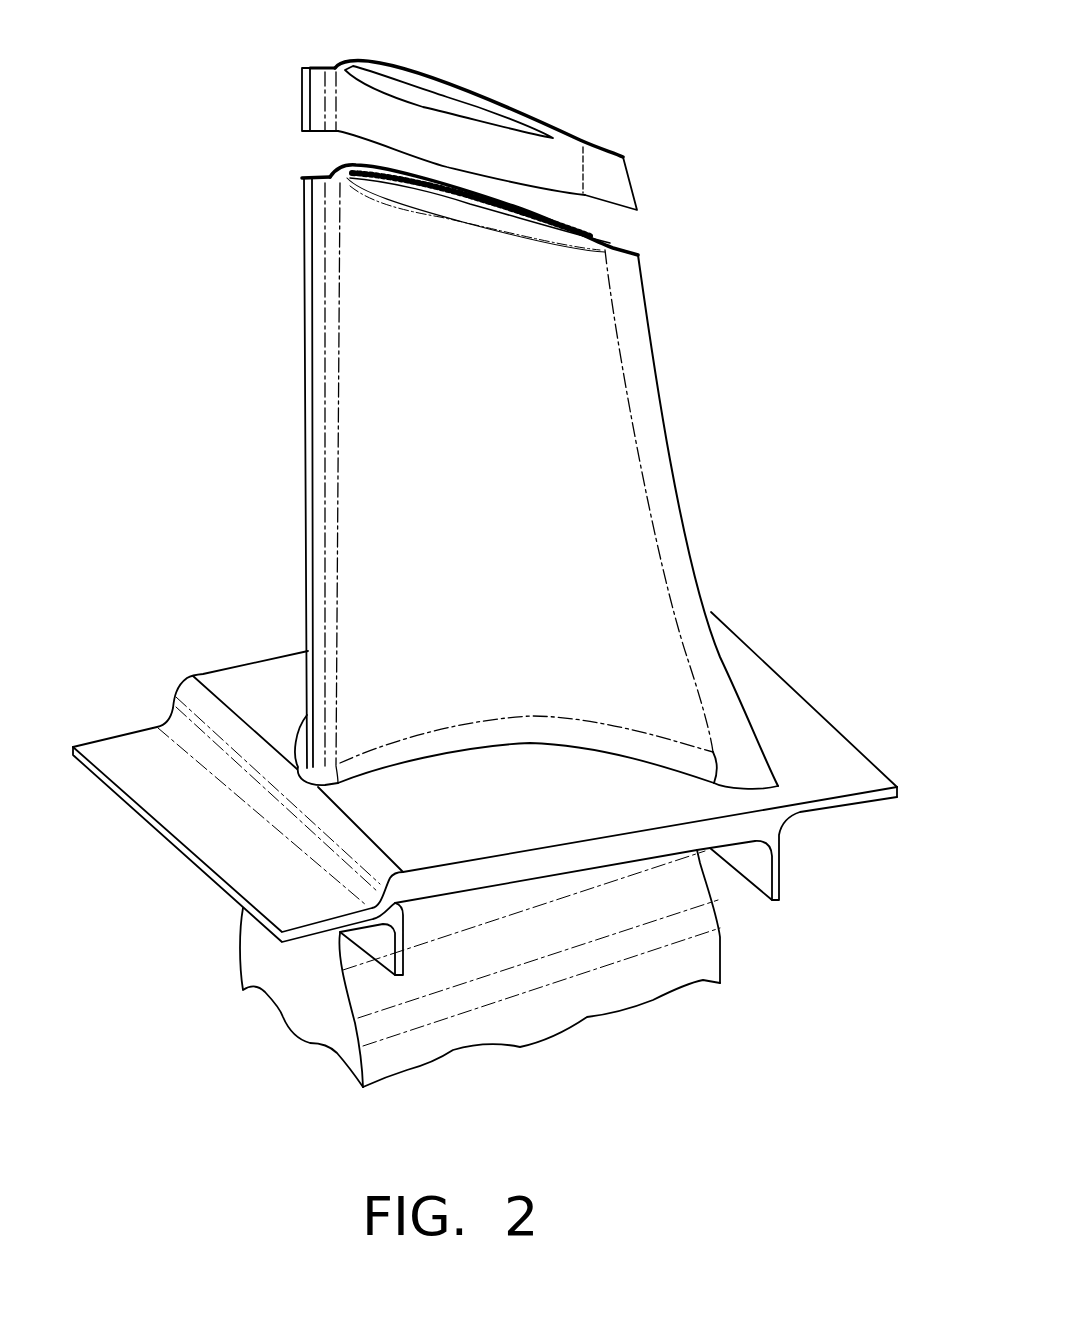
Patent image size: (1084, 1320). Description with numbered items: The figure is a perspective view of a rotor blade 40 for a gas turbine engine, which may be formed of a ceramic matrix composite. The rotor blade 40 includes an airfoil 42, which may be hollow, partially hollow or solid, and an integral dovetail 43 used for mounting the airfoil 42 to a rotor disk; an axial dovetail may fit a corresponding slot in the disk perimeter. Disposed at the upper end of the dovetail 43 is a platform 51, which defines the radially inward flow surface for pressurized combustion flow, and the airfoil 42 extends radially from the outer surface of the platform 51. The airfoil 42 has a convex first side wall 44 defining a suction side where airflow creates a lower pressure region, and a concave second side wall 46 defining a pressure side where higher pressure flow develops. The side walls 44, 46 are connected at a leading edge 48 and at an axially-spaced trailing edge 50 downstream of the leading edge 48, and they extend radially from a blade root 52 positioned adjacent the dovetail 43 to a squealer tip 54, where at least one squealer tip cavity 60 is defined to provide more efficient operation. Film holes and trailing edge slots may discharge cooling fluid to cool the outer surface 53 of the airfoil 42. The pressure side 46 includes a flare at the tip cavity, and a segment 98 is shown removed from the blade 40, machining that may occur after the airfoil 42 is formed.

The rotor blade 40 is at (707, 67).
The airfoil 42 is at (687, 290).
The dovetail 43 is at (747, 970).
The first side wall 44 is at (560, 497).
The second side wall 46 is at (617, 568).
The leading edge 48 is at (293, 407).
The trailing edge 50 is at (665, 357).
The platform 51 is at (526, 811).
The blade root 52 is at (743, 777).
The outer surface 53 is at (645, 498).
The squealer tip 54 is at (607, 228).
The squealer tip cavity 60 is at (390, 175).
The segment 98 is at (510, 108).